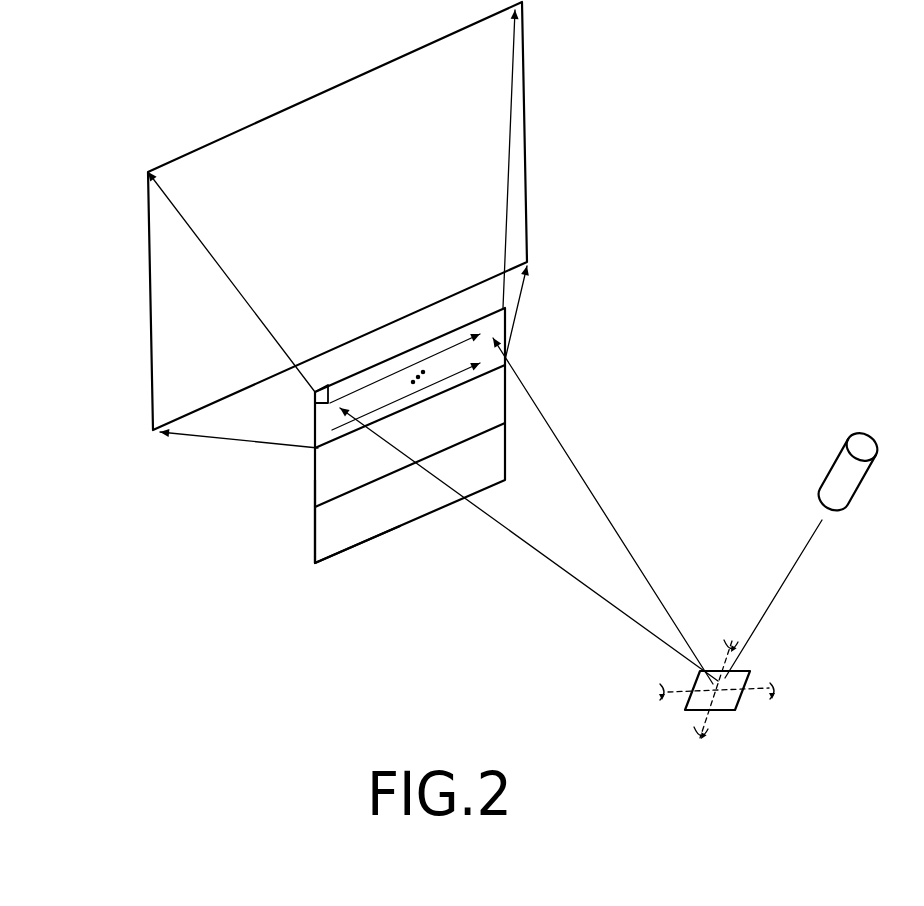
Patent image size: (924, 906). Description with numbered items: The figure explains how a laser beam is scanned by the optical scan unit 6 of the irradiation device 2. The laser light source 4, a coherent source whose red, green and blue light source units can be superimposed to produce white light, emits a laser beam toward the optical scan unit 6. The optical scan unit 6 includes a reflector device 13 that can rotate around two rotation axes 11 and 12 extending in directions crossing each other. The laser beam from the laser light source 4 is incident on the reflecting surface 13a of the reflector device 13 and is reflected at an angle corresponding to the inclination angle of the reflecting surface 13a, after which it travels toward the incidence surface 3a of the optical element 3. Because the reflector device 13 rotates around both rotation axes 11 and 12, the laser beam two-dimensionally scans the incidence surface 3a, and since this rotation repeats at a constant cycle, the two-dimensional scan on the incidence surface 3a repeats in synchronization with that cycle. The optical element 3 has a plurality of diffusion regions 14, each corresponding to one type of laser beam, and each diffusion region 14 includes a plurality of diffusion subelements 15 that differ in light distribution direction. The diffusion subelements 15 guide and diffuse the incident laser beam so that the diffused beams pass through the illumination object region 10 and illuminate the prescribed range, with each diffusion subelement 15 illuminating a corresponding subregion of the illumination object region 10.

The irradiation device 2 is at (805, 578).
The optical element 3 is at (374, 467).
The incidence surface 3a is at (335, 540).
The laser light source 4 is at (843, 477).
The optical scan unit 6 is at (727, 725).
The illumination object region 10 is at (527, 145).
The rotation axis 11 is at (724, 662).
The rotation axis 12 is at (757, 684).
The reflector device 13 is at (742, 702).
The reflecting surface 13a is at (688, 702).
The diffusion region 14 is at (330, 533).
The diffusion subelement 15 is at (310, 393).